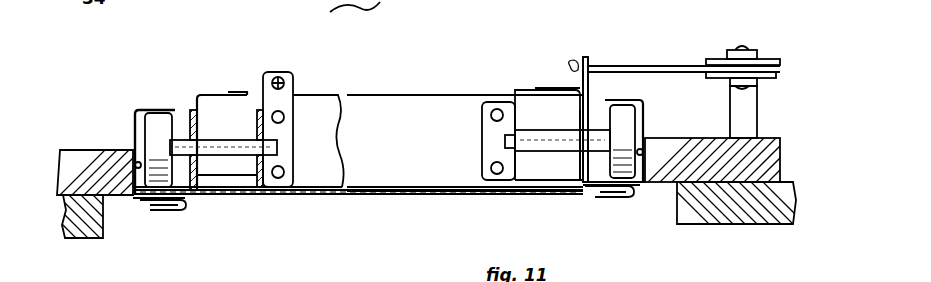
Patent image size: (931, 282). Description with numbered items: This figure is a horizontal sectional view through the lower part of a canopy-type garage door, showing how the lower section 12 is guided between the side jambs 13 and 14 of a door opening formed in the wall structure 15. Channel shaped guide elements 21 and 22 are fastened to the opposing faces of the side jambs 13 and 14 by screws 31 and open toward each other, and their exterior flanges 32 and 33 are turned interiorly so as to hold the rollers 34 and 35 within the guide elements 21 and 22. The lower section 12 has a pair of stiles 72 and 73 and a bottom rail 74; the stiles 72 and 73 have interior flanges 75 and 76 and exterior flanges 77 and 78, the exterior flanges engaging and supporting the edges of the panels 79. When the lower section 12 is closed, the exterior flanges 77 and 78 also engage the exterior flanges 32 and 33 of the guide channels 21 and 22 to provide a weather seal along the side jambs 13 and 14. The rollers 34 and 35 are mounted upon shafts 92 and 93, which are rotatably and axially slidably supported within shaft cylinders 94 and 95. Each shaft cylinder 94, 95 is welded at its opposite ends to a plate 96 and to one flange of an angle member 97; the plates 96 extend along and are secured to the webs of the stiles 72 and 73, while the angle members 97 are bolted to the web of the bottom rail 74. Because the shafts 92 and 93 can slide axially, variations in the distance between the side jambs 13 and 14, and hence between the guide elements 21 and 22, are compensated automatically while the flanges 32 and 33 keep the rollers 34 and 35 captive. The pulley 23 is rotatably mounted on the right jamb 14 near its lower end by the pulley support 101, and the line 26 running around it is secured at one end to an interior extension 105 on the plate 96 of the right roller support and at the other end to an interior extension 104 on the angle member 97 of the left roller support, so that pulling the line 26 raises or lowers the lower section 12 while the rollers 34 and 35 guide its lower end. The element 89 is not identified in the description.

The lower section 12 is at (392, 97).
The side jamb 13 is at (98, 165).
The side jamb 14 is at (768, 140).
The wall structure 15 is at (731, 206).
The guide element 21 is at (133, 125).
The guide element 22 is at (645, 114).
The pulley 23 is at (766, 62).
The line 26 is at (666, 68).
The screws 31 is at (135, 198).
The exterior flange 32 is at (141, 201).
The exterior flange 33 is at (645, 188).
The roller 34 is at (158, 118).
The roller 35 is at (622, 112).
The stile 72 is at (208, 119).
The stile 73 is at (573, 102).
The bottom rail 74 is at (393, 170).
The interior flange 75 is at (242, 92).
The interior flange 76 is at (545, 90).
The exterior flange 77 is at (170, 210).
The exterior flange 78 is at (617, 199).
The panels 79 is at (286, 196).
The bottom strip 89 is at (452, 193).
The shaft 92 is at (278, 149).
The shaft 93 is at (503, 142).
The shaft cylinder 94 is at (240, 172).
The shaft cylinder 95 is at (548, 150).
The plate 96 is at (193, 118).
The angle member 97 is at (263, 112).
The pulley support 101 is at (740, 105).
The interior extension 104 is at (285, 78).
The interior extension 105 is at (586, 58).